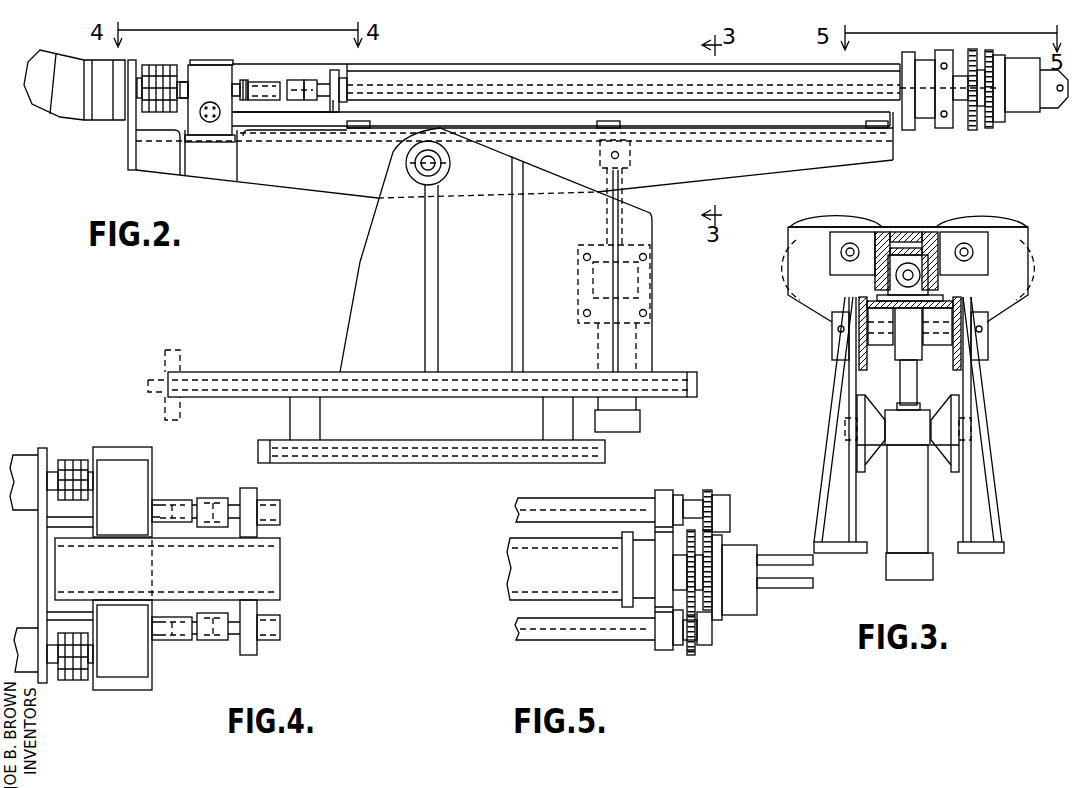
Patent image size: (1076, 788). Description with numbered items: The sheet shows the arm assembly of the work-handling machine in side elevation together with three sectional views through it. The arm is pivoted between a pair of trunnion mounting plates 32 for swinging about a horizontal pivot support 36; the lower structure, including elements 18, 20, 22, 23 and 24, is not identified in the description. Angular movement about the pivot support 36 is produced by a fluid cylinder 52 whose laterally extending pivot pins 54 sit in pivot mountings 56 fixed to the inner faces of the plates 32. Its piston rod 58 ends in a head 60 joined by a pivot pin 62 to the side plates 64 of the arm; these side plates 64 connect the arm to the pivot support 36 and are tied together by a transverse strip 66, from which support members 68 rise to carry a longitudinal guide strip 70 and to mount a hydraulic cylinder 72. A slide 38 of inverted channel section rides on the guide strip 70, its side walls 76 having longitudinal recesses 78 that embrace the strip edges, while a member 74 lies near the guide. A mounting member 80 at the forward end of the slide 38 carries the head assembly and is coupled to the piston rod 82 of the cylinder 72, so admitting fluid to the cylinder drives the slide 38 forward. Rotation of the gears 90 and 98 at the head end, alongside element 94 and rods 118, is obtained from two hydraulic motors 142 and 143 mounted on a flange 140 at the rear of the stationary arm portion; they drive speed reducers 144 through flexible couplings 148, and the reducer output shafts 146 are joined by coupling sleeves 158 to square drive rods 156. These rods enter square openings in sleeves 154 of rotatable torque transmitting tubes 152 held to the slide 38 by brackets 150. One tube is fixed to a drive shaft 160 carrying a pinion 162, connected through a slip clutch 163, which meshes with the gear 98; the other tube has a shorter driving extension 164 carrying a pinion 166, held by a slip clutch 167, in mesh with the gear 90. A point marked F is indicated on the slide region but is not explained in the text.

In FIG. 2, the lower bracket flange 18 is at (181, 418).
In FIG. 2, the base plate 20 is at (181, 362).
In FIG. 2, the mounting bracket 22 is at (153, 362).
In FIG. 2, the support legs 23 is at (321, 416).
In FIG. 2, the lower plate 24 is at (473, 440).
In FIG. 2, the trunnion mounting plates 32 is at (350, 288).
In FIG. 3, the trunnion mounting plates 32 is at (830, 399).
In FIG. 2, the pivot support 36 is at (447, 171).
In FIG. 2, the slide 38 is at (636, 63).
In FIG. 3, the slide 38 is at (930, 232).
In FIG. 4, the slide 38 is at (185, 600).
In FIG. 5, the slide 38 is at (581, 569).
In FIG. 2, the fluid cylinder 52 is at (640, 409).
In FIG. 3, the fluid cylinder 52 is at (893, 513).
In FIG. 3, the pivot pins 54 is at (870, 420).
In FIG. 3, the pivot mountings 56 is at (876, 463).
In FIG. 2, the piston rod 58 is at (625, 193).
In FIG. 3, the piston rod 58 is at (915, 393).
In FIG. 2, the head 60 is at (632, 156).
In FIG. 3, the head 60 is at (919, 348).
In FIG. 3, the pivot pin 62 is at (962, 356).
In FIG. 2, the side plates 64 is at (322, 190).
In FIG. 3, the side plates 64 is at (859, 366).
In FIG. 3, the transverse strip 66 is at (988, 319).
In FIG. 3, the support members 68 is at (832, 326).
In FIG. 3, the guide strip 70 is at (913, 245).
In FIG. 2, the hydraulic cylinder 72 is at (812, 122).
In FIG. 3, the hydraulic cylinder 72 is at (925, 281).
In FIG. 3, the bushing 74 is at (883, 232).
In FIG. 3, the side walls 76 is at (845, 269).
In FIG. 3, the recesses 78 is at (858, 232).
In FIG. 2, the mounting member 80 is at (924, 60).
In FIG. 5, the mounting member 80 is at (643, 545).
In FIG. 3, the piston rod 82 is at (893, 278).
In FIG. 2, the gear 90 is at (975, 50).
In FIG. 5, the gear 90 is at (687, 548).
In FIG. 2, the motor 94 is at (1018, 113).
In FIG. 5, the motor 94 is at (746, 594).
In FIG. 2, the gear 98 is at (995, 50).
In FIG. 5, the gear 98 is at (713, 610).
In FIG. 5, the shaft rods 118 is at (810, 590).
In FIG. 2, the flange 140 is at (128, 150).
In FIG. 4, the flange 140 is at (47, 563).
In FIG. 2, the hydraulic motor 142 is at (63, 116).
In FIG. 4, the hydraulic motor 142 is at (20, 445).
In FIG. 4, the hydraulic motor 143 is at (23, 630).
In FIG. 2, the speed reducers 144 is at (204, 48).
In FIG. 4, the speed reducers 144 is at (107, 446).
In FIG. 4, the output shafts 146 is at (164, 499).
In FIG. 4, the flexible couplings 148 is at (82, 684).
In FIG. 4, the brackets 150 is at (281, 606).
In FIG. 4, the torque transmitting tubes 152 is at (283, 498).
In FIG. 4, the sleeves 154 is at (220, 498).
In FIG. 4, the square drive rods 156 is at (195, 521).
In FIG. 4, the coupling sleeves 158 is at (173, 523).
In FIG. 5, the drive shaft 160 is at (686, 504).
In FIG. 5, the pinion 162 is at (709, 488).
In FIG. 5, the slip clutch 163 is at (730, 516).
In FIG. 5, the driving extension 164 is at (680, 648).
In FIG. 5, the pinion 166 is at (692, 656).
In FIG. 5, the slip clutch 167 is at (705, 650).
In FIG. 2, the frame reference F is at (340, 73).